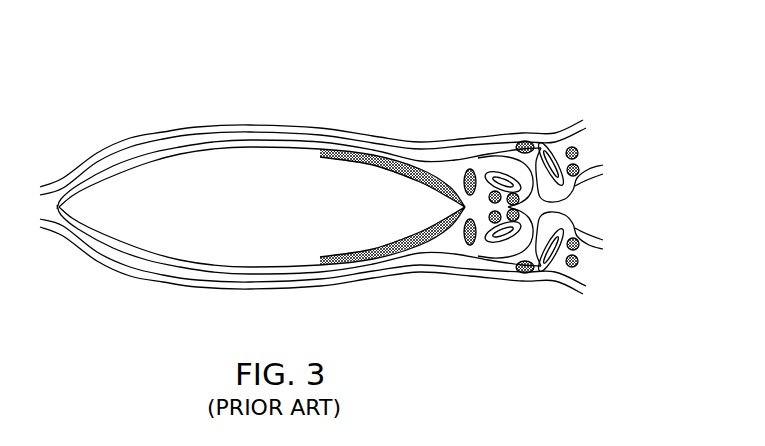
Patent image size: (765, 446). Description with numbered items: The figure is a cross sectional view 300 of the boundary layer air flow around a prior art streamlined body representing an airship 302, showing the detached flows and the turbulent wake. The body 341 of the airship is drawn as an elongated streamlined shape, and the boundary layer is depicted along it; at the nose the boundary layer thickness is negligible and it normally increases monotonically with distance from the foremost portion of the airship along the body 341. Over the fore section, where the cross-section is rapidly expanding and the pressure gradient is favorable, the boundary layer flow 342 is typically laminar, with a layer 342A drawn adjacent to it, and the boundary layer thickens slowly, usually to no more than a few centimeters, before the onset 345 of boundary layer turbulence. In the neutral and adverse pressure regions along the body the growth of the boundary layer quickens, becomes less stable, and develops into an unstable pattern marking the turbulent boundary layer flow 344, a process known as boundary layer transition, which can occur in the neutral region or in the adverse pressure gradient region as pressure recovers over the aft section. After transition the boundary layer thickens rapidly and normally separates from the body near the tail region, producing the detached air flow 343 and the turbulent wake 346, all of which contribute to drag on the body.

The cross sectional view 300 is at (209, 90).
The airship 302 is at (276, 218).
The body 341 is at (230, 265).
The boundary layer flow 342 is at (197, 149).
The anterior capsule outer layer 342A is at (315, 138).
The detached air flow 343 is at (420, 255).
The turbulent boundary layer flow 344 is at (373, 156).
The onset of turbulent boundary layer flow 345 is at (325, 263).
The turbulent wake 346 is at (500, 152).